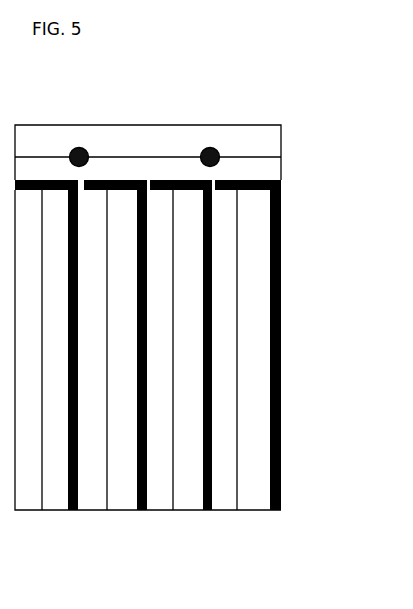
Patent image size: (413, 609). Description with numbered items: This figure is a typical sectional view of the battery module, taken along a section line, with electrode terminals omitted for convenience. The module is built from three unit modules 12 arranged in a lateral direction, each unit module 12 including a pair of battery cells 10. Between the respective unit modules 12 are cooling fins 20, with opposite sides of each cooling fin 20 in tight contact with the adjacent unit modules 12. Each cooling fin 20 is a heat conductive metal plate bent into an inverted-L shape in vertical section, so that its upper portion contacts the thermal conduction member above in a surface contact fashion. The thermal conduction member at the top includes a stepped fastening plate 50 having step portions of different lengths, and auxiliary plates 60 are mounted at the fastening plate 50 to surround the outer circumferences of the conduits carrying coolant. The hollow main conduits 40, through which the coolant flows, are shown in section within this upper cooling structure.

The battery cell 10 is at (260, 492).
The unit module 12 is at (137, 513).
The cooling fin 20 is at (281, 288).
The main conduit 40 is at (217, 148).
The fastening plate 50 is at (257, 166).
The auxiliary plate 60 is at (259, 138).